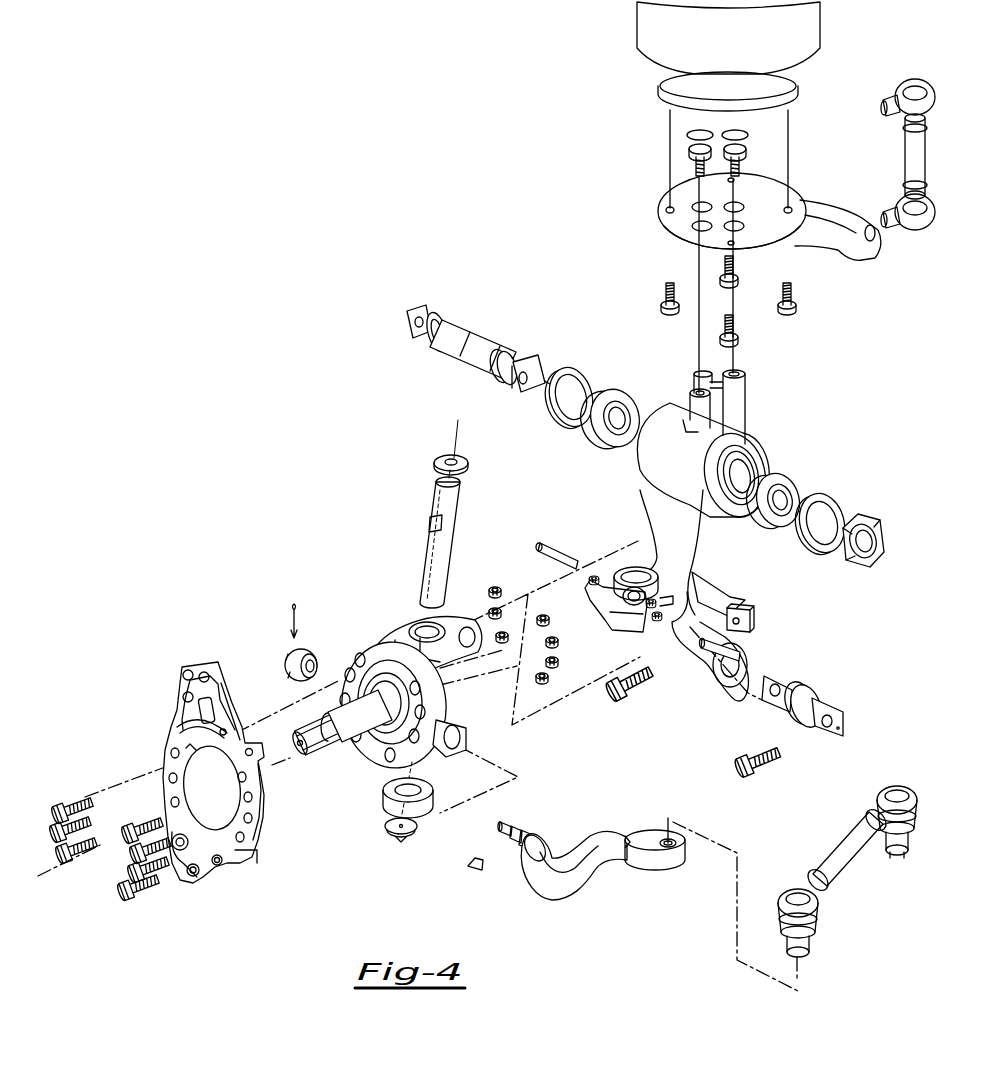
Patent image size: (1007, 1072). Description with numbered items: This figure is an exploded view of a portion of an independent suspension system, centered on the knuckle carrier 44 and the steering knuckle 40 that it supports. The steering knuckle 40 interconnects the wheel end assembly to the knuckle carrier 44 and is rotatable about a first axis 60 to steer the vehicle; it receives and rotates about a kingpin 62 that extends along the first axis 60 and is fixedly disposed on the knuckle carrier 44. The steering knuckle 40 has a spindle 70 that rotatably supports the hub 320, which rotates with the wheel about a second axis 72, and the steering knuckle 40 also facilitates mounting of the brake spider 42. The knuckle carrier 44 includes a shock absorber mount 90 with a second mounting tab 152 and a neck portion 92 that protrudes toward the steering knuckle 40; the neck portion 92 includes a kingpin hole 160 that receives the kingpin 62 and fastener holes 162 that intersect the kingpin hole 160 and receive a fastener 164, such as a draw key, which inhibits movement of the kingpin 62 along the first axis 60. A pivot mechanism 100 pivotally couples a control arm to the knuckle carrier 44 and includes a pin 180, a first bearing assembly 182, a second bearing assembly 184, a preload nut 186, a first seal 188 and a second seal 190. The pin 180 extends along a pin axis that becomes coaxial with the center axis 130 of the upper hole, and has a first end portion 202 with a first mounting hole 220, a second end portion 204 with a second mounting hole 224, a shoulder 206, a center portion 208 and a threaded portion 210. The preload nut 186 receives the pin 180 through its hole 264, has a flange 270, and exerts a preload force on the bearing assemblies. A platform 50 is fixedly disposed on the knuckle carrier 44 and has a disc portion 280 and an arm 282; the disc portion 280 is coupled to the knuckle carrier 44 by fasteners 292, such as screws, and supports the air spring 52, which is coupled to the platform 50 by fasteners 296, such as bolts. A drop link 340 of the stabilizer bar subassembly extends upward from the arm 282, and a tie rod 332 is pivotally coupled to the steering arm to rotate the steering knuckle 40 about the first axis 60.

The steering knuckle 40 is at (384, 682).
The brake spider 42 is at (200, 660).
The knuckle carrier 44 is at (663, 512).
The platform 50 is at (655, 193).
The air spring 52 is at (742, 38).
The first axis 60 is at (452, 438).
The kingpin 62 is at (428, 505).
The spindle 70 is at (333, 708).
The second axis 72 is at (110, 848).
The shock absorber mount 90 is at (752, 592).
The neck portion 92 is at (610, 600).
The pivot mechanism 100 is at (453, 327).
The center axis 130 is at (876, 550).
The second mounting tab 152 is at (755, 612).
The kingpin hole 160 is at (634, 569).
The fastener holes 162 is at (617, 628).
The fastener 164 is at (560, 552).
The pin 180 is at (482, 328).
The first bearing assembly 182 is at (613, 392).
The second bearing assembly 184 is at (787, 475).
The preload nut 186 is at (868, 520).
The first seal 188 is at (588, 374).
The second seal 190 is at (830, 495).
The first end portion 202 is at (420, 308).
The second end portion 204 is at (535, 362).
The shoulder 206 is at (440, 312).
The center portion 208 is at (458, 358).
The threaded portion 210 is at (500, 370).
The first mounting hole 220 is at (410, 326).
The second mounting hole 224 is at (512, 385).
The hole 264 is at (875, 545).
The flange 270 is at (847, 568).
The disc portion 280 is at (773, 183).
The arm 282 is at (866, 248).
The fasteners 292 is at (736, 128).
The fasteners 296 is at (667, 300).
The hub 320 is at (607, 832).
The tie rod 332 is at (845, 845).
The drop link 340 is at (905, 157).